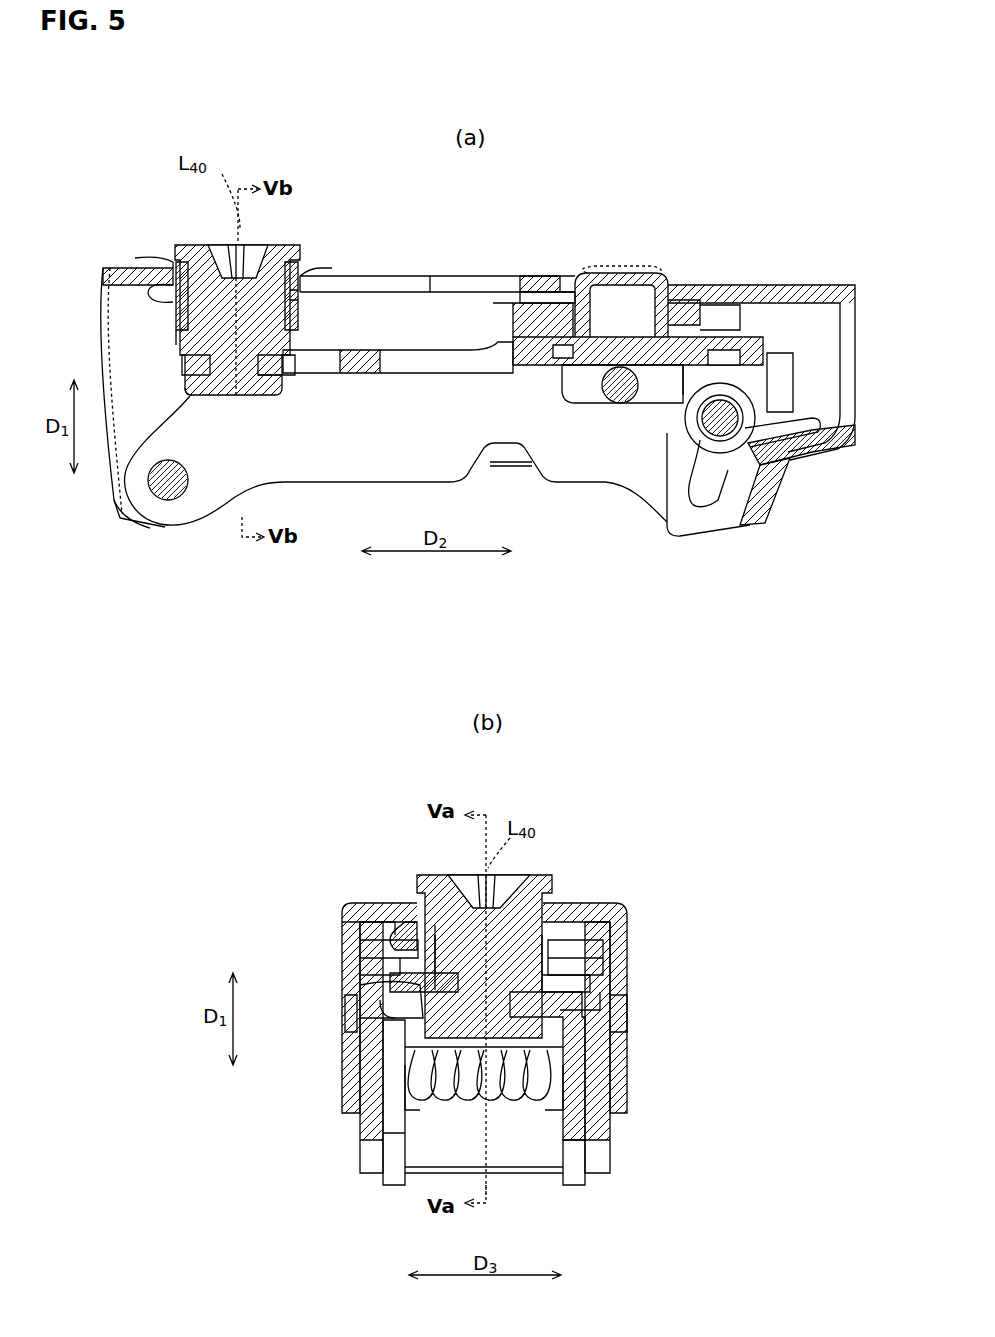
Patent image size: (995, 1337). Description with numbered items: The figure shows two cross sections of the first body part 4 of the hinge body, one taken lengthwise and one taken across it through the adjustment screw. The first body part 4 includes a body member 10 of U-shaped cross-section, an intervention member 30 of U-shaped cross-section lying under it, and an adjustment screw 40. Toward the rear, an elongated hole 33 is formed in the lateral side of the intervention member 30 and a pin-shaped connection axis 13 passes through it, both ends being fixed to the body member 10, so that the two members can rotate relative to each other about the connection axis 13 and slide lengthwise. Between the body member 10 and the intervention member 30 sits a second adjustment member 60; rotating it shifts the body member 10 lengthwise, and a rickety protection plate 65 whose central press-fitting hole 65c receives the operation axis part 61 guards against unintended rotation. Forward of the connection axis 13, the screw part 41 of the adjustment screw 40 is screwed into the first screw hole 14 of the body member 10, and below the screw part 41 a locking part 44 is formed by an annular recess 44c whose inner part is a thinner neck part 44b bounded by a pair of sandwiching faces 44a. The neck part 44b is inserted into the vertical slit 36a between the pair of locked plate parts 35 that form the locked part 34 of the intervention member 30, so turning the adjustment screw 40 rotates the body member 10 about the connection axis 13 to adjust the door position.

The first body part 4 is at (755, 255).
The body member 10 is at (118, 262).
The connection axis 13 is at (607, 395).
The first screw hole 14 is at (268, 290).
The intervention member 30 is at (385, 350).
The elongated hole 33 is at (645, 400).
The locked part 34 is at (176, 343).
The locked plate parts 35 is at (400, 965).
The vertical slit 36a is at (500, 1085).
The adjustment screw 40 is at (185, 246).
The screw part 41 is at (176, 318).
The locking part 44 is at (265, 395).
The sandwiching faces 44a is at (182, 359).
The neck part 44b is at (270, 378).
The annular recess 44c is at (190, 400).
The second adjustment member 60 is at (600, 275).
The operation axis part 61 is at (660, 275).
The rickety protection plate 65 is at (517, 285).
The press-fitting hole 65c is at (535, 302).